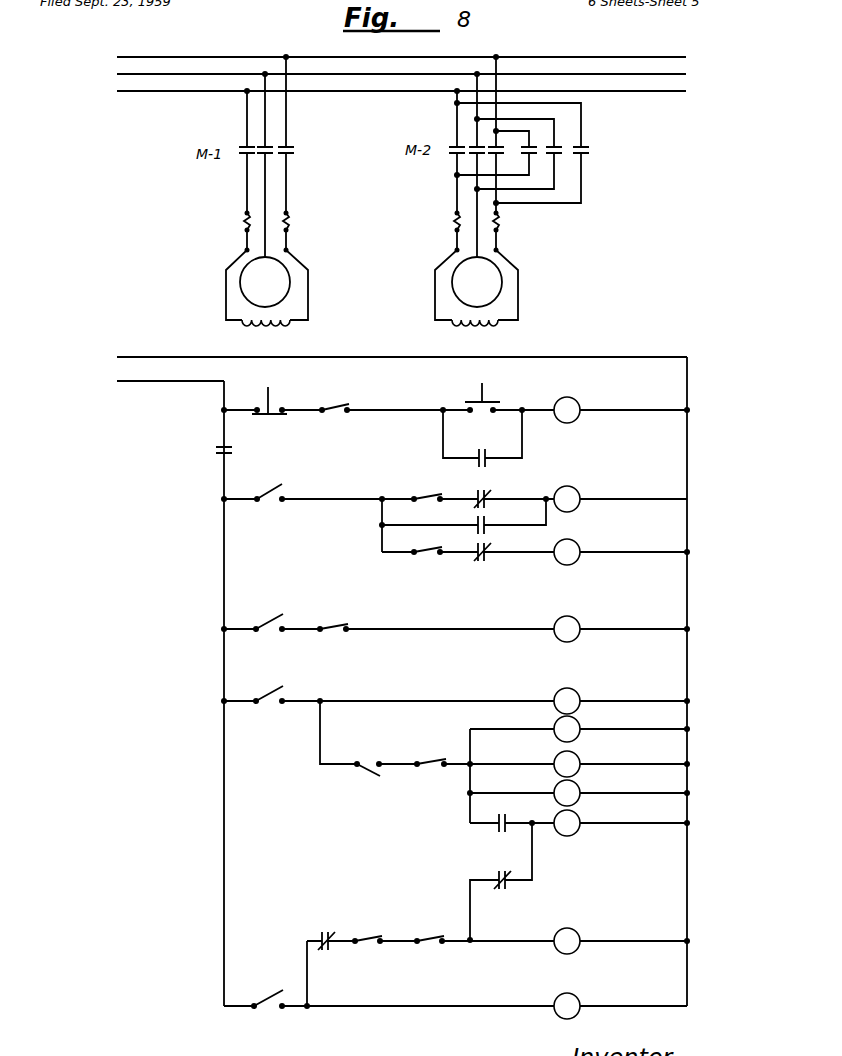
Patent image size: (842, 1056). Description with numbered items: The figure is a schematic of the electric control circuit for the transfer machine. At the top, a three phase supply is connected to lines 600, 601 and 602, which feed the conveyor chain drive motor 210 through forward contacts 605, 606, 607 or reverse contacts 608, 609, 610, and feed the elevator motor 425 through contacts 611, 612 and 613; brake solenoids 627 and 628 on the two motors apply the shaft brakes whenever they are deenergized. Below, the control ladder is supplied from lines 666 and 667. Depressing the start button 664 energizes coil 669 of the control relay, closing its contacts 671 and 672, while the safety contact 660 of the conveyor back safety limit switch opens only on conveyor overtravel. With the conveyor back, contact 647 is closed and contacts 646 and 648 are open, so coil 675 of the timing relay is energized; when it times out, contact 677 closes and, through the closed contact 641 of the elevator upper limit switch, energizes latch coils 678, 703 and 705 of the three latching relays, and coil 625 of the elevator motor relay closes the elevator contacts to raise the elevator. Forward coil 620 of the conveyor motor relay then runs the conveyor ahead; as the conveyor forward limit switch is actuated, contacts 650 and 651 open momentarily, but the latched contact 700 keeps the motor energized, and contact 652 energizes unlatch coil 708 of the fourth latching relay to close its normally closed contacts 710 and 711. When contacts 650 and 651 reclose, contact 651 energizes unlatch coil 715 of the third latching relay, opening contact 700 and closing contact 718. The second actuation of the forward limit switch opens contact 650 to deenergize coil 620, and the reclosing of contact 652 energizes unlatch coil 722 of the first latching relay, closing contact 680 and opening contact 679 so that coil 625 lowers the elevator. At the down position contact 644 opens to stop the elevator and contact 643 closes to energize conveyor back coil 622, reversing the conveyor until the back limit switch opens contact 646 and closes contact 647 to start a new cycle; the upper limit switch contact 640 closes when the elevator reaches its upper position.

The supply line 600 is at (129, 57).
The supply line 601 is at (117, 74).
The supply line 602 is at (146, 92).
The conveyor forward contact 605 is at (453, 155).
The conveyor forward contact 606 is at (475, 144).
The conveyor forward contact 607 is at (492, 155).
The conveyor reverse contact 608 is at (535, 147).
The conveyor reverse contact 609 is at (558, 149).
The conveyor reverse contact 610 is at (586, 153).
The elevator motor contact 611 is at (243, 146).
The elevator motor contact 612 is at (270, 146).
The elevator motor contact 613 is at (291, 150).
The elevator motor 425 is at (242, 286).
The conveyor chain drive motor 210 is at (455, 286).
The brake solenoid 628 is at (255, 329).
The brake solenoid 627 is at (465, 329).
The control line 666 is at (128, 357).
The control line 667 is at (118, 383).
The safety limit switch contact 660 is at (330, 426).
The start button 664 is at (484, 398).
The relay coil 669 is at (572, 400).
The relay contact 671 is at (484, 452).
The relay contact 672 is at (219, 455).
The upper limit switch contact 640 is at (265, 515).
The forward limit switch contact 650 is at (420, 496).
The normally closed contact 710 is at (486, 483).
The normally open contact 700 is at (476, 522).
The conveyor forward coil 620 is at (575, 488).
The unlatch coil 715 is at (571, 540).
The forward limit switch contact 651 is at (422, 568).
The normally closed contact 711 is at (498, 570).
The lower limit switch contact 643 is at (268, 645).
The back limit switch contact 646 is at (334, 645).
The conveyor reverse coil 622 is at (574, 618).
The back limit switch contact 647 is at (266, 717).
The timing relay coil 675 is at (574, 690).
The timing relay contact 677 is at (353, 786).
The upper limit switch contact 641 is at (424, 782).
The latching coil 705 is at (576, 722).
The latch coil 678 is at (576, 755).
The latching coil 703 is at (576, 787).
The relay contact 679 is at (480, 840).
The elevator relay coil 625 is at (574, 836).
The relay contact 680 is at (520, 898).
The unlatch coil 722 is at (574, 930).
The unlatch coil 708 is at (573, 994).
The relay contact 718 is at (331, 960).
The back limit switch contact 648 is at (362, 957).
The lower limit switch contact 644 is at (426, 957).
The forward limit switch contact 652 is at (264, 1022).